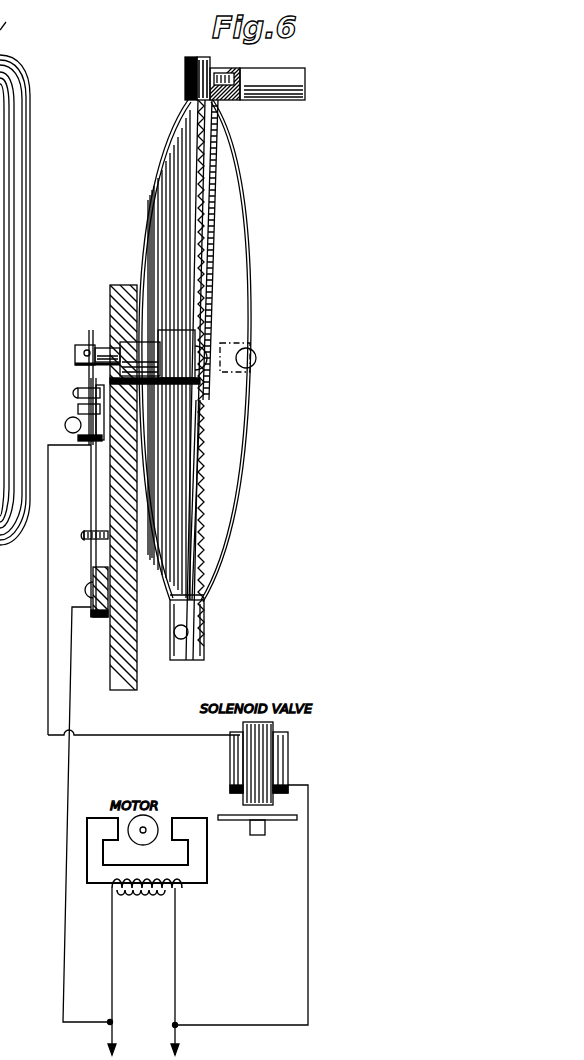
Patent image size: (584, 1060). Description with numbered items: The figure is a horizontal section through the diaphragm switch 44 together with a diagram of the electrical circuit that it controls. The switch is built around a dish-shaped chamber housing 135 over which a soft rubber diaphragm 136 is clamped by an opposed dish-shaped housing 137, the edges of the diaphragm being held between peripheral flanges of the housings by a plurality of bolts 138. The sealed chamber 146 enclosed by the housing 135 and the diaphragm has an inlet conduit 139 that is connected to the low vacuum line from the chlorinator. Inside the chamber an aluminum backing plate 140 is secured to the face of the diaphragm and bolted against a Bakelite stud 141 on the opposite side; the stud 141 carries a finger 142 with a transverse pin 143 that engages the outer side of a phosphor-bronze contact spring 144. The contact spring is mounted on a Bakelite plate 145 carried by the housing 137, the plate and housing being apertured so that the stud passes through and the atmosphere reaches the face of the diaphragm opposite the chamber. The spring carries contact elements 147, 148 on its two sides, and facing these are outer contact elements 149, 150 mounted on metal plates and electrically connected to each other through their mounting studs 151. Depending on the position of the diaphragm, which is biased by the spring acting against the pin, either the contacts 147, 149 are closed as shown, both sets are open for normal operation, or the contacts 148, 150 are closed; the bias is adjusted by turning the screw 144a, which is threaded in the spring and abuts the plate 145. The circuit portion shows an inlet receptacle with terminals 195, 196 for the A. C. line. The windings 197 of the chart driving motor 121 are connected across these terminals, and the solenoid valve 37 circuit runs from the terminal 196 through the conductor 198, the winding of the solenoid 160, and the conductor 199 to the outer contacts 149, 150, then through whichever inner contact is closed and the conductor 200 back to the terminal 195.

The bolts 138 is at (185, 82).
The dish-shaped housing 137 is at (165, 160).
The soft rubber diaphragm 136 is at (188, 155).
The dish-shaped chamber housing 135 is at (236, 156).
The aluminum backing plate 140 is at (212, 223).
The chamber 146 is at (240, 258).
The Bakelite plate 145 is at (120, 285).
The Bakelite stud 141 is at (176, 340).
The inlet conduit 139 is at (250, 340).
The transverse pin 143 is at (90, 345).
The finger 142 is at (76, 352).
The contact element 147 is at (86, 388).
The contact element 149 is at (78, 393).
The contact element 148 is at (78, 409).
The mounting studs 151 is at (78, 437).
The contact element 150 is at (88, 447).
The contact spring 144 is at (91, 502).
The screw 144a is at (82, 538).
The diaphragm switch 44 is at (232, 597).
The conductor 199 is at (141, 735).
The solenoid 160 is at (232, 749).
The solenoid valve 37 is at (226, 770).
The conductor 200 is at (68, 817).
The chart driving motor 121 is at (195, 860).
The windings 197 is at (150, 895).
The conductor 198 is at (308, 942).
The terminal 195 is at (112, 1022).
The terminal 196 is at (178, 1023).